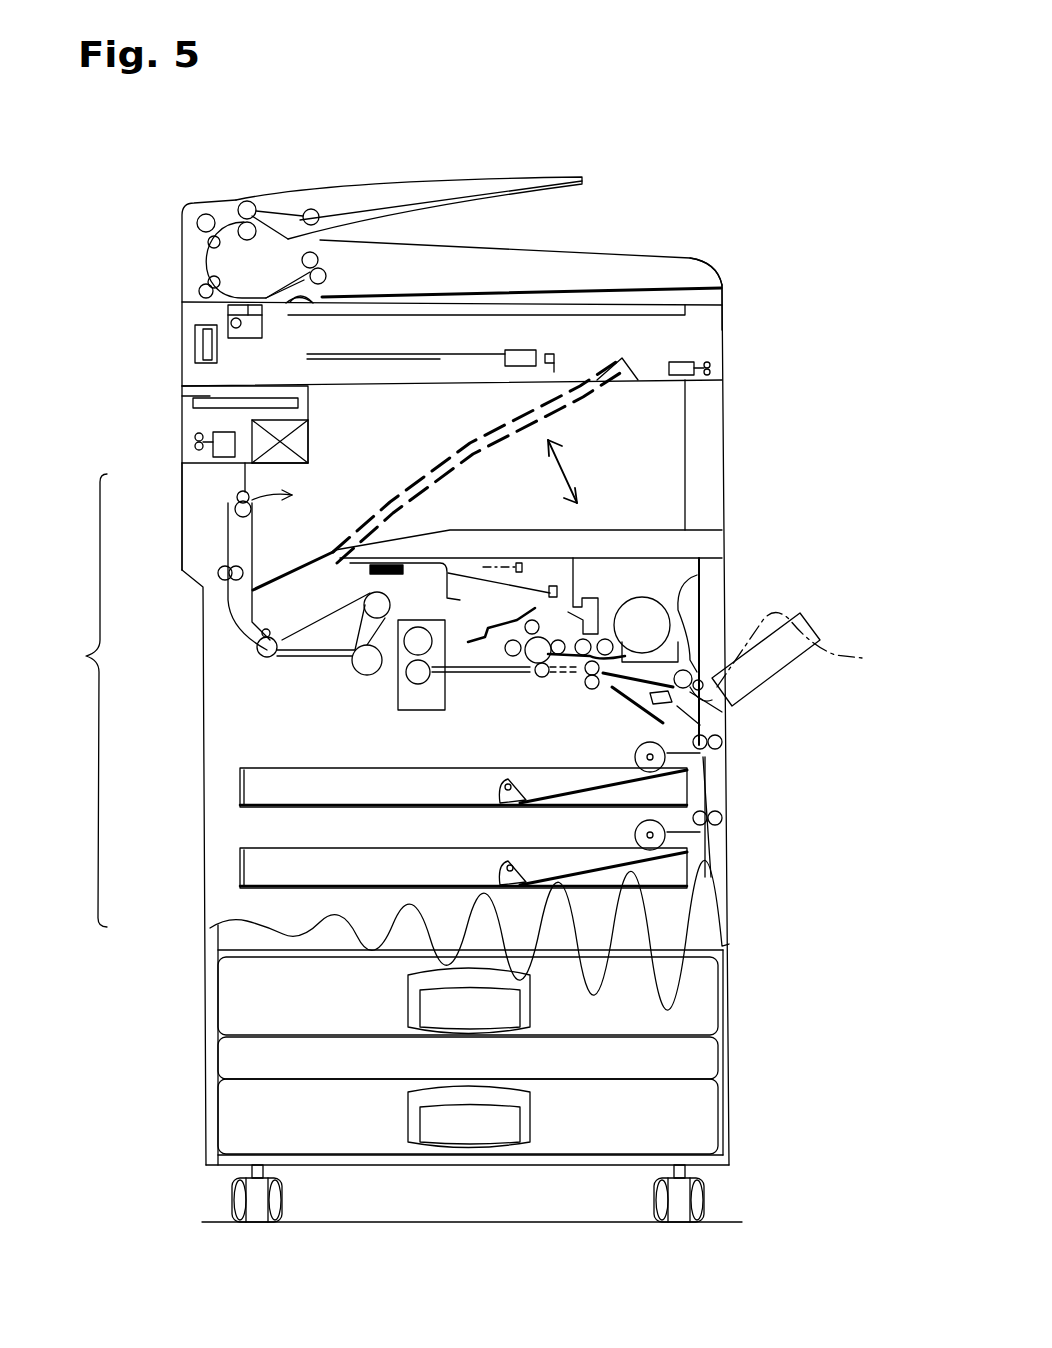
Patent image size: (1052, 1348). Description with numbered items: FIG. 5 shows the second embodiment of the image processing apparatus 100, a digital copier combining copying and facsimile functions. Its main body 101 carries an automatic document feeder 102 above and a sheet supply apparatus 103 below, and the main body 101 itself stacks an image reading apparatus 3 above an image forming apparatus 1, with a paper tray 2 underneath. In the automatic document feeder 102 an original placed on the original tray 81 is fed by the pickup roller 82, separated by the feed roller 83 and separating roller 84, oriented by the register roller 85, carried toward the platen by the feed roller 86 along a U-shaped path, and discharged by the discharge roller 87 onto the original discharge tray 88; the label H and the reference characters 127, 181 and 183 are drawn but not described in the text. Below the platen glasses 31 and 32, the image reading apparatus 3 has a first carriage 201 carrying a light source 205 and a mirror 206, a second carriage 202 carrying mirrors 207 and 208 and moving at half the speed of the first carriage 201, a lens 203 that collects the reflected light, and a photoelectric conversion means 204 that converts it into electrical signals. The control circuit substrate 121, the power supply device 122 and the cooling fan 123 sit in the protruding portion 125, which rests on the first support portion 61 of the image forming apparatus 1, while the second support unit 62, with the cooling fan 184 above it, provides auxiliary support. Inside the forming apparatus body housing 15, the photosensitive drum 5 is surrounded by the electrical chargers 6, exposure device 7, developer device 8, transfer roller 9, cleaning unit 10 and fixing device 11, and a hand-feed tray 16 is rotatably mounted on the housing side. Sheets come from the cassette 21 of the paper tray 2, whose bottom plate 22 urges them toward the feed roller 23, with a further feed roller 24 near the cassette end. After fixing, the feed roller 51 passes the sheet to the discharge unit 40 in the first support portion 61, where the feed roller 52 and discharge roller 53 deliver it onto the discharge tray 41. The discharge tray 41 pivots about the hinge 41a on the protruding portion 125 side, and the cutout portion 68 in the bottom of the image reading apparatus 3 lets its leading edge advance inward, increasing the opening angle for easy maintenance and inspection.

The image processing apparatus 100 is at (622, 112).
The image processing apparatus main body 101 is at (61, 700).
The automatic document feeder 102 is at (180, 222).
The sheet supply apparatus 103 is at (203, 1018).
The original tray 81 is at (515, 179).
The pickup roller 82 is at (315, 209).
The feed roller 83 is at (250, 201).
The separating roller 84 is at (247, 241).
The register roller 85 is at (207, 212).
The feed roller 86 is at (199, 289).
The discharge roller 87 is at (319, 259).
The original discharge tray 88 is at (572, 284).
The document reading position H is at (314, 306).
The platen glass 32 is at (265, 308).
The platen glass 31 is at (641, 312).
The image reading apparatus 3 is at (744, 340).
The scanner housing corner 127 is at (724, 322).
The first carriage 201 is at (252, 333).
The second carriage 202 is at (192, 350).
The lens 203 is at (520, 350).
The photoelectric conversion means 204 is at (553, 354).
The light source 205 is at (232, 320).
The mirror 206 is at (244, 318).
The mirror 207 is at (190, 330).
The mirror 208 is at (182, 392).
The optical unit 181 is at (710, 356).
The cooling fan 184 is at (690, 376).
The cutout portion 68 is at (627, 381).
The second support unit 62 is at (714, 462).
The control board 183 is at (298, 392).
The power supply device 122 is at (306, 442).
The control circuit substrate 121 is at (200, 428).
The cooling fan 123 is at (222, 458).
The protruding portion 125 is at (290, 463).
The discharge unit 40 is at (225, 515).
The first support portion 61 is at (195, 532).
The discharge roller 53 is at (251, 508).
The feed roller 52 is at (232, 598).
The feed roller 51 is at (262, 650).
The hinge 41a is at (293, 586).
The discharge tray 41 is at (620, 532).
The exposure device 7 is at (488, 560).
The developer device 8 is at (590, 620).
The electrical chargers 6 is at (515, 612).
The cleaning unit 10 is at (510, 653).
The photosensitive drum 5 is at (528, 664).
The transfer roller 9 is at (542, 680).
The fixing device 11 is at (415, 706).
The image forming apparatus 1 is at (742, 718).
The forming apparatus body housing 15 is at (722, 582).
The hand-feed tray 16 is at (845, 655).
The feed roller 23 is at (645, 749).
The feed roller 24 is at (722, 745).
The cassette 21 is at (288, 770).
The bottom plate 22 is at (567, 810).
The paper tray 2 is at (742, 846).